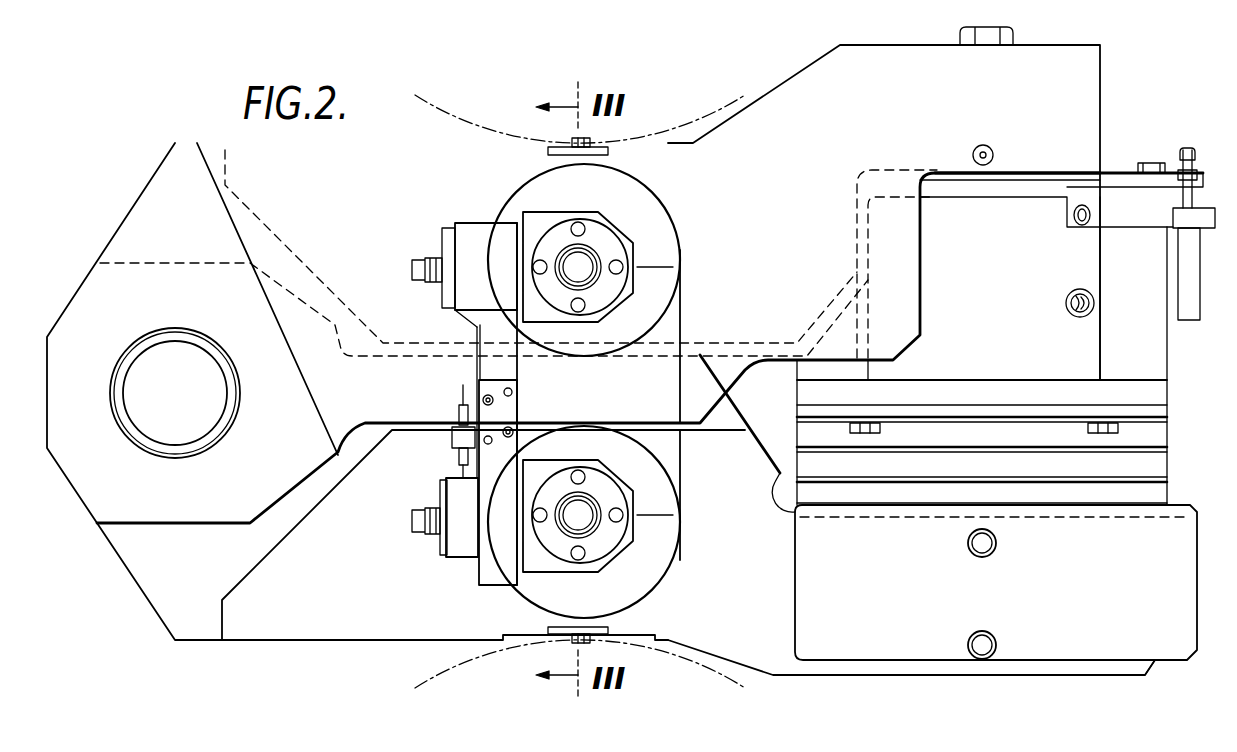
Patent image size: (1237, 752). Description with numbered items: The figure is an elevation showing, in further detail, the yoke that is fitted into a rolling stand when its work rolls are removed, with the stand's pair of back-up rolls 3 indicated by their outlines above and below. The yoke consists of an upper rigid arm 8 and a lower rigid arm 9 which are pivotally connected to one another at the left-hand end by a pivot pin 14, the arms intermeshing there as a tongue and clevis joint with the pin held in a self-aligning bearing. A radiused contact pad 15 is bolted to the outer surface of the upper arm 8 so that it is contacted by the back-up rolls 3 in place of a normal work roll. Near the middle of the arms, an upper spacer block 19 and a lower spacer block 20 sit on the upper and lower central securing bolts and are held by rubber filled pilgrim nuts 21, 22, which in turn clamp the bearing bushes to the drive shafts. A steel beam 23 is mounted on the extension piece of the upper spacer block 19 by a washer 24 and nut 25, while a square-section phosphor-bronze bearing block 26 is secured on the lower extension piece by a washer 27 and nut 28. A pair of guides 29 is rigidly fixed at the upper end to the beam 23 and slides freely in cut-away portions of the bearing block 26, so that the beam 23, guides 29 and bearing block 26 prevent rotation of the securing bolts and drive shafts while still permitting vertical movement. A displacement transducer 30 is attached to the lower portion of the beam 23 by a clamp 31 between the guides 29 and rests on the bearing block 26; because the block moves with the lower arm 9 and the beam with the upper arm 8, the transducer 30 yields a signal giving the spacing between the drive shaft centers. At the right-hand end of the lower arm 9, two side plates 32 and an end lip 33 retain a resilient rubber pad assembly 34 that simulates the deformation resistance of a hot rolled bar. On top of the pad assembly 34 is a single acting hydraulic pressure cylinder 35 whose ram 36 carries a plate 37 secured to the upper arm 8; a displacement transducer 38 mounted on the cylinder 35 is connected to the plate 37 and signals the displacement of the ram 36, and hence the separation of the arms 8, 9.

The back-up rolls 3 is at (455, 112).
The upper rigid arm 8 is at (855, 56).
The lower rigid arm 9 is at (727, 668).
The pivot pin 14 is at (167, 368).
The contact pad 15 is at (625, 149).
The upper spacer block 19 is at (543, 222).
The lower spacer block 20 is at (540, 568).
The upper pilgrim nut 21 is at (545, 250).
The lower pilgrim nut 22 is at (610, 537).
The steel beam 23 is at (467, 252).
The washer 24 is at (446, 296).
The nut 25 is at (412, 270).
The bearing block 26 is at (466, 546).
The washer 27 is at (442, 481).
The nut 28 is at (433, 528).
The guides 29 is at (497, 568).
The displacement transducer 30 is at (462, 414).
The clamp 31 is at (462, 439).
The side plates 32 is at (1185, 642).
The lip 33 is at (1165, 507).
The resilient rubber pad assembly 34 is at (1150, 463).
The hydraulic pressure cylinder 35 is at (1070, 345).
The ram 36 is at (1020, 190).
The plate 37 is at (1115, 181).
The displacement transducer 38 is at (1189, 298).